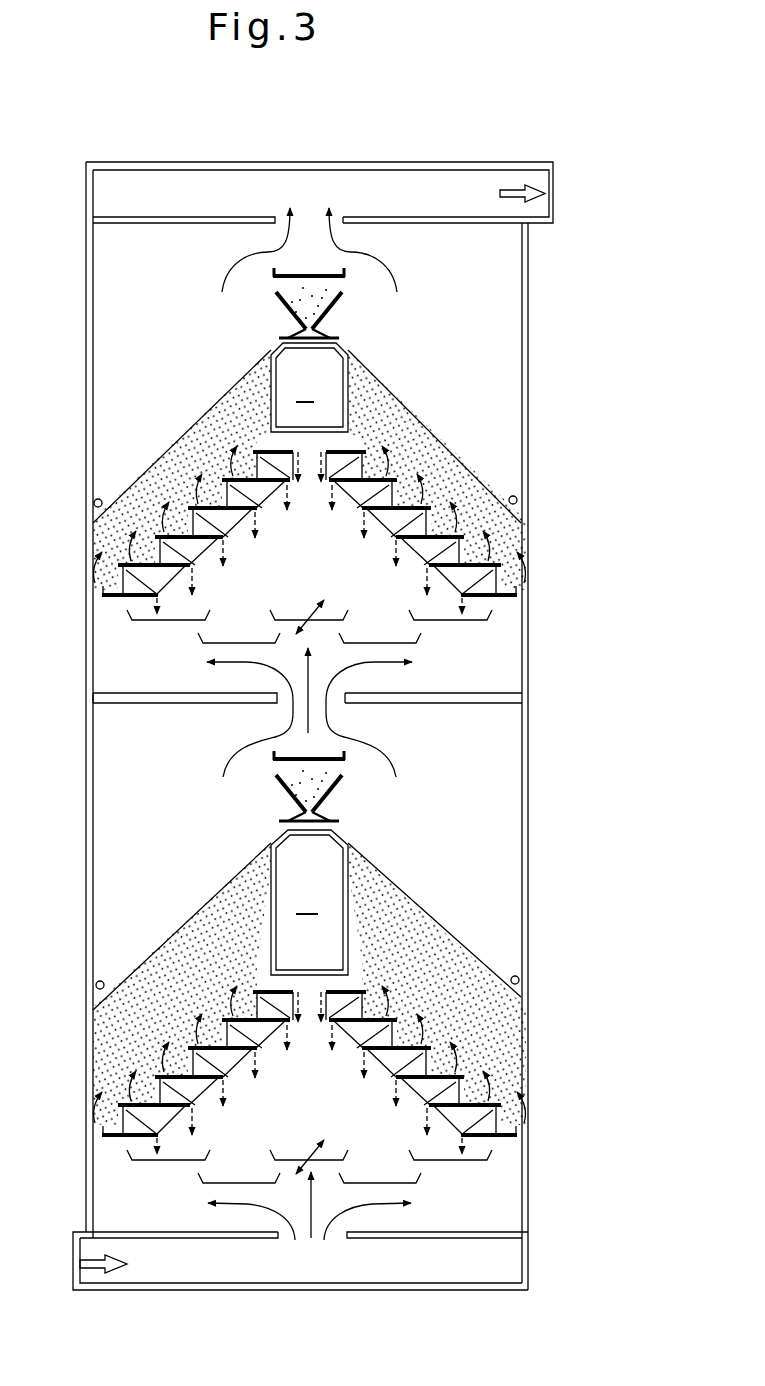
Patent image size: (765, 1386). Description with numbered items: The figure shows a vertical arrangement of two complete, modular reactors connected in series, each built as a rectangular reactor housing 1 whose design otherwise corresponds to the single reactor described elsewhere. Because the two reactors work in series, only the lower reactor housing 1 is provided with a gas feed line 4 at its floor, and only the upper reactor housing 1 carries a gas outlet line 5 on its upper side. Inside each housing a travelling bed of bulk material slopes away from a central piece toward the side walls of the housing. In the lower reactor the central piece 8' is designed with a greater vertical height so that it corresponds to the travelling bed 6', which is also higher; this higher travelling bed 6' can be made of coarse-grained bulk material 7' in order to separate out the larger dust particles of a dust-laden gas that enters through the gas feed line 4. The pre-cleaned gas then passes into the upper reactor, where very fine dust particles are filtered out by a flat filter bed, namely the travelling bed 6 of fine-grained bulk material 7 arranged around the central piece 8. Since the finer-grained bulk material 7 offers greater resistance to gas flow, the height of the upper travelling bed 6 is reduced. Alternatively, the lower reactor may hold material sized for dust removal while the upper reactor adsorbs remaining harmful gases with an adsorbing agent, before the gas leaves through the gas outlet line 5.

The reactor housing 1 is at (527, 415).
The gas feed line 4 is at (365, 1292).
The gas outlet line 5 is at (410, 162).
The travelling bed 6 is at (309, 465).
The travelling bed 6' is at (309, 980).
The bulk material 7 is at (330, 304).
The bulk material 7' is at (335, 791).
The central piece 8 is at (309, 387).
The central piece 8' is at (309, 902).